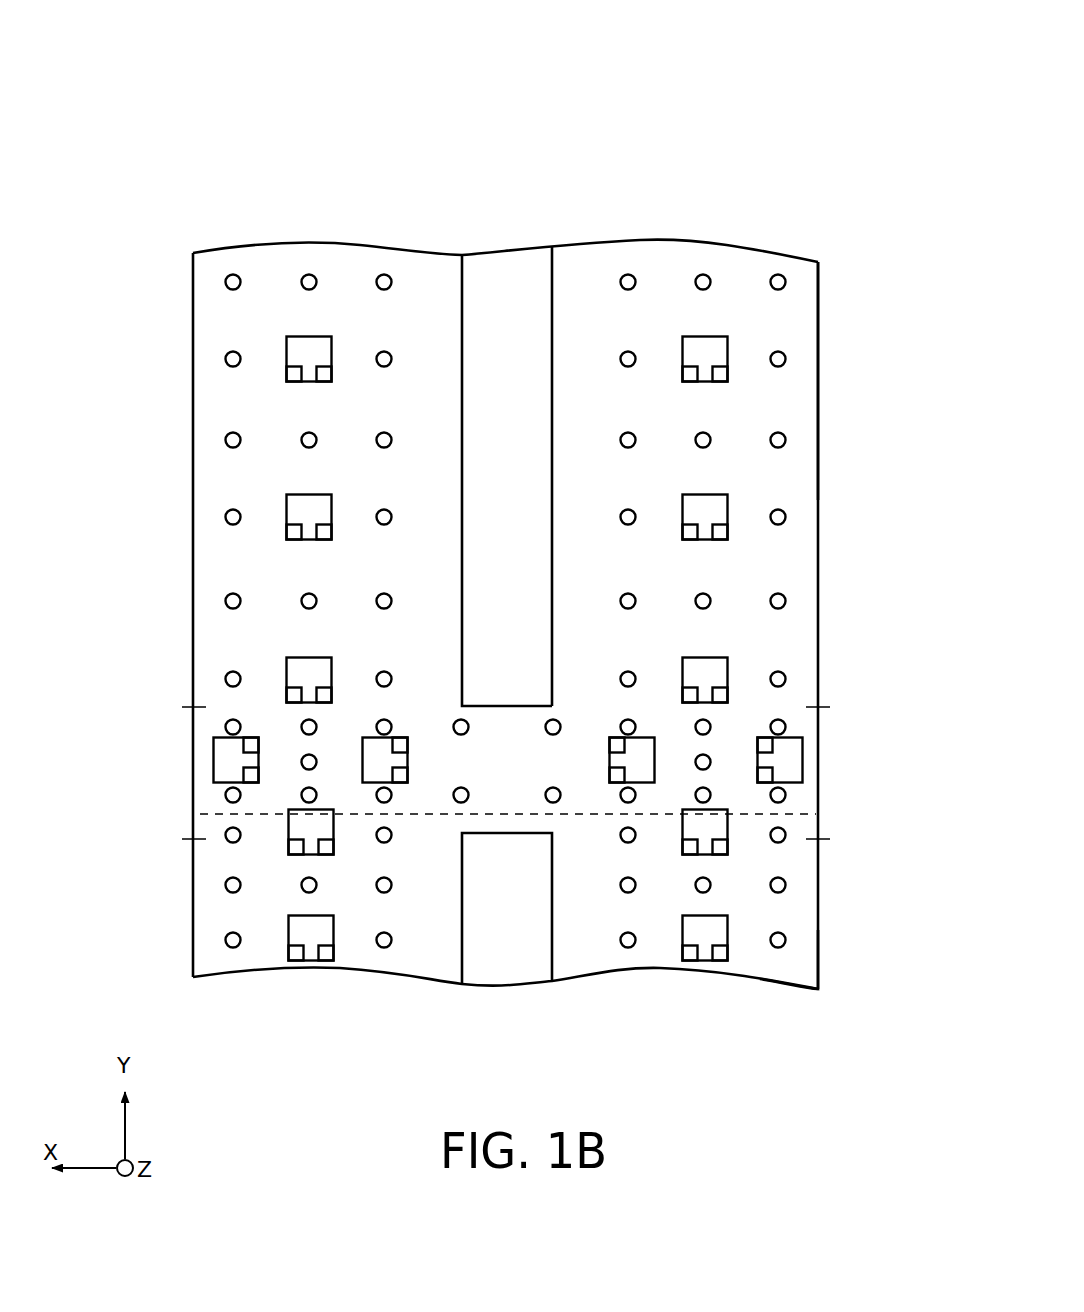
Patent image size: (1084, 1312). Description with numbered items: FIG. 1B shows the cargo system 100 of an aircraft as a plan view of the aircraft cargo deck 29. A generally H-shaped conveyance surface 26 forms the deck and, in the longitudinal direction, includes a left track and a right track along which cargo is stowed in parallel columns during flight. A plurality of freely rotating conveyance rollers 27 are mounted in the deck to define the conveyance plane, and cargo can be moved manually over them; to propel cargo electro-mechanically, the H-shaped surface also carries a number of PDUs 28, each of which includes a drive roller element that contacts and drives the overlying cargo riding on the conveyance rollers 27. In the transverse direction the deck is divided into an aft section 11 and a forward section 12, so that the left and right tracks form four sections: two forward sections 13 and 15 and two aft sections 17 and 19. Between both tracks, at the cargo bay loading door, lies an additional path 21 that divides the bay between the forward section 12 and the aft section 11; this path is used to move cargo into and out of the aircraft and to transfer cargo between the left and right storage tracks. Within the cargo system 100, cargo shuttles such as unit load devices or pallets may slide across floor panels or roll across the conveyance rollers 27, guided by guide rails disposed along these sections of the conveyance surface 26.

The cargo system 100 is at (225, 108).
The aft section 11 is at (178, 935).
The forward section 12 is at (164, 440).
The forward section of track 13 is at (397, 272).
The forward section of track 15 is at (801, 286).
The aft section of track 17 is at (422, 956).
The aft section of track 19 is at (787, 976).
The additional path 21 is at (144, 788).
The H-shaped conveyance surface 26 is at (518, 291).
The conveyance rollers 27 is at (393, 514).
The PDUs 28 is at (333, 678).
The aircraft cargo deck 29 is at (537, 291).